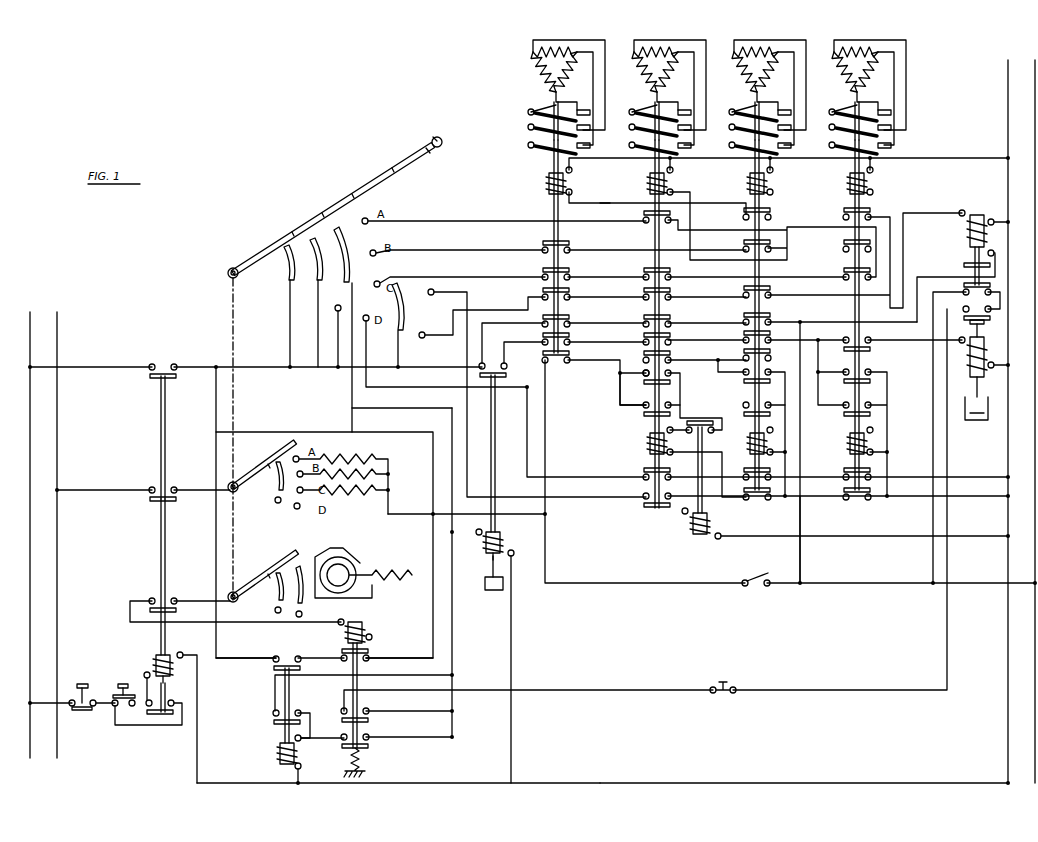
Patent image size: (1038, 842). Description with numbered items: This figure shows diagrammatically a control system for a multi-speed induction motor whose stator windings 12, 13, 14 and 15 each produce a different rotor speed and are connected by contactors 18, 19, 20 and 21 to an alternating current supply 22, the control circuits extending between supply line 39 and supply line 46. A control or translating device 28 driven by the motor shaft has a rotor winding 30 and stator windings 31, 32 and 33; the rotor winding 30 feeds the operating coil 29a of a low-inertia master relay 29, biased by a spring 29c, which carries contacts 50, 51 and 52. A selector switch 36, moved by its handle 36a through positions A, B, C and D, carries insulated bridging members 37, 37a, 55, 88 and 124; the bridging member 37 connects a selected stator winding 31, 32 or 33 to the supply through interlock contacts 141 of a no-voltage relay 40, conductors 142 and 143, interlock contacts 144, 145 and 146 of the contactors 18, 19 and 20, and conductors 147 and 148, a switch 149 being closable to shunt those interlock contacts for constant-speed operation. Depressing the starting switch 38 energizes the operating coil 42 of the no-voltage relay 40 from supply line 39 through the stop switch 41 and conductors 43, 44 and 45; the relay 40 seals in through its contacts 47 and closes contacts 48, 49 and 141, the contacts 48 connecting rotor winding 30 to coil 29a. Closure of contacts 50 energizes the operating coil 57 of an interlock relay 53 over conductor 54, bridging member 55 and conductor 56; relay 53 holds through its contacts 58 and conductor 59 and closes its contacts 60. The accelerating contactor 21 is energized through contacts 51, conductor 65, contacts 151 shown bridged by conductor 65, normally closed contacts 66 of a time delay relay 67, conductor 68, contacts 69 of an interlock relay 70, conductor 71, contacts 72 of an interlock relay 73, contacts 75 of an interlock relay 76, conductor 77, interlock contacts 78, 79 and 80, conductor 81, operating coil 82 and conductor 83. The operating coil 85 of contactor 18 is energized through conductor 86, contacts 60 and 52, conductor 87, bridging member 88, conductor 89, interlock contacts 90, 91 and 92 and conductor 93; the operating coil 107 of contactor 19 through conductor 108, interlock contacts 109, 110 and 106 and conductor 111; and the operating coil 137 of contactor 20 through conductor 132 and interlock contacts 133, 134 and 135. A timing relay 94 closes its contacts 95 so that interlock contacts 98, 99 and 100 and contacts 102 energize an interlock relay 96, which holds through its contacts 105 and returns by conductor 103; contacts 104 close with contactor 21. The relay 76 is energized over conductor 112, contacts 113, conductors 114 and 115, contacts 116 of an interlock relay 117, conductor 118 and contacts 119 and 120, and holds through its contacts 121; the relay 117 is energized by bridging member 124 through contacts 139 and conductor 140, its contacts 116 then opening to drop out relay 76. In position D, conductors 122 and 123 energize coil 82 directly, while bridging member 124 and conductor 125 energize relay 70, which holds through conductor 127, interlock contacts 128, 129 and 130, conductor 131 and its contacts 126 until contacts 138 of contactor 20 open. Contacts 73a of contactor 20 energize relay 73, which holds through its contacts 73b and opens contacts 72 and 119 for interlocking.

The motor 12 is at (566, 97).
The motor 13 is at (667, 97).
The motor 14 is at (767, 97).
The motor 15 is at (867, 97).
The motor switch 18 is at (541, 104).
The motor switch 19 is at (642, 104).
The motor switch 20 is at (744, 104).
The motor switch 21 is at (844, 104).
The supply line 22 is at (57, 552).
The control unit 28 is at (366, 535).
The relay 29 is at (360, 687).
The relay coil 29a is at (346, 632).
The relay spring 29c is at (364, 762).
The solenoid 30 is at (404, 572).
The resistor 31 is at (380, 454).
The resistor 32 is at (388, 468).
The resistor 33 is at (388, 490).
The selector lever 36 is at (304, 203).
The lever knob 36a is at (428, 140).
The selector arm 37 is at (276, 452).
The selector arm 37a is at (276, 562).
The push button 38 is at (126, 688).
The supply line 39 is at (30, 588).
The relay 40 is at (156, 658).
The push button 41 is at (80, 684).
The relay coil 42 is at (172, 676).
The conductor 43 is at (196, 748).
The conductor 44 is at (462, 783).
The conductor 45 is at (772, 784).
The conductor 46 is at (1004, 662).
The contact 47 is at (172, 700).
The contact 48 is at (152, 600).
The contact 49 is at (166, 366).
The contact 50 is at (368, 740).
The contact 51 is at (368, 714).
The contact 52 is at (368, 658).
The contact 53 is at (270, 722).
The conductor 54 is at (262, 367).
The contact segment 55 is at (292, 236).
The conductor 56 is at (340, 400).
The relay coil 57 is at (270, 754).
The conductor 58 is at (300, 710).
The conductor 59 is at (334, 676).
The contact 60 is at (286, 660).
The conductor 65 is at (596, 690).
The relay coil 66 is at (986, 340).
The dashpot 67 is at (986, 394).
The contact 68 is at (990, 303).
The contact 69 is at (963, 294).
The contact 70 is at (962, 268).
The conductor 71 is at (932, 400).
The contact 72 is at (745, 472).
The relay coil 73 is at (749, 432).
The contact 73a is at (767, 432).
The contact 73b is at (764, 421).
The contact 75 is at (645, 472).
The relay coil 76 is at (648, 432).
The conductor 77 is at (527, 425).
The contact 78 is at (570, 292).
The contact 79 is at (671, 292).
The contact 80 is at (771, 291).
The conductor 81 is at (892, 208).
The relay coil 82 is at (869, 184).
The conductor 83 is at (922, 158).
The relay coil 85 is at (568, 182).
The conductor 86 is at (215, 440).
The conductor 87 is at (451, 622).
The contact segment 88 is at (323, 278).
The conductor 89 is at (471, 221).
The contact 90 is at (644, 222).
The contact 91 is at (746, 210).
The contact 92 is at (846, 210).
The conductor 93 is at (613, 206).
The relay 94 is at (484, 572).
The contact 95 is at (506, 362).
The contact 96 is at (845, 472).
The contact 98 is at (570, 337).
The contact 99 is at (671, 337).
The contact 100 is at (771, 336).
The contact 102 is at (871, 371).
The conductor 103 is at (965, 488).
The contact 104 is at (871, 342).
The contact 105 is at (844, 378).
The contact 106 is at (845, 244).
The relay coil 107 is at (669, 182).
The conductor 108 is at (561, 245).
The contact 109 is at (570, 244).
The contact 110 is at (745, 244).
The conductor 111 is at (702, 236).
The contact 112 is at (643, 374).
The contact 113 is at (650, 385).
The conductor 114 is at (681, 392).
The conductor 115 is at (682, 418).
The contact 116 is at (714, 430).
The relay coil 117 is at (706, 504).
The conductor 118 is at (708, 463).
The contact 119 is at (762, 500).
The contact 120 is at (858, 500).
The contact 121 is at (658, 405).
The conductor 122 is at (340, 308).
The conductor 123 is at (440, 388).
The contact segment 124 is at (382, 178).
The conductor 125 is at (500, 310).
The relay coil 126 is at (958, 256).
The conductor 127 is at (486, 334).
The contact 128 is at (570, 319).
The contact 129 is at (671, 319).
The contact 130 is at (771, 318).
The conductor 131 is at (916, 280).
The conductor 132 is at (613, 273).
The contact 133 is at (570, 271).
The contact 134 is at (671, 271).
The contact 135 is at (845, 270).
The relay coil 137 is at (769, 182).
The conductor 138 is at (456, 292).
The contact 139 is at (644, 500).
The conductor 140 is at (848, 538).
The contact 141 is at (150, 488).
The conductor 142 is at (418, 516).
The conductor 143 is at (548, 552).
The contact 144 is at (557, 367).
The contact 145 is at (671, 354).
The contact 146 is at (771, 352).
The conductor 147 is at (801, 434).
The conductor 148 is at (884, 583).
The switch 149 is at (744, 580).
The switch 151 is at (726, 681).